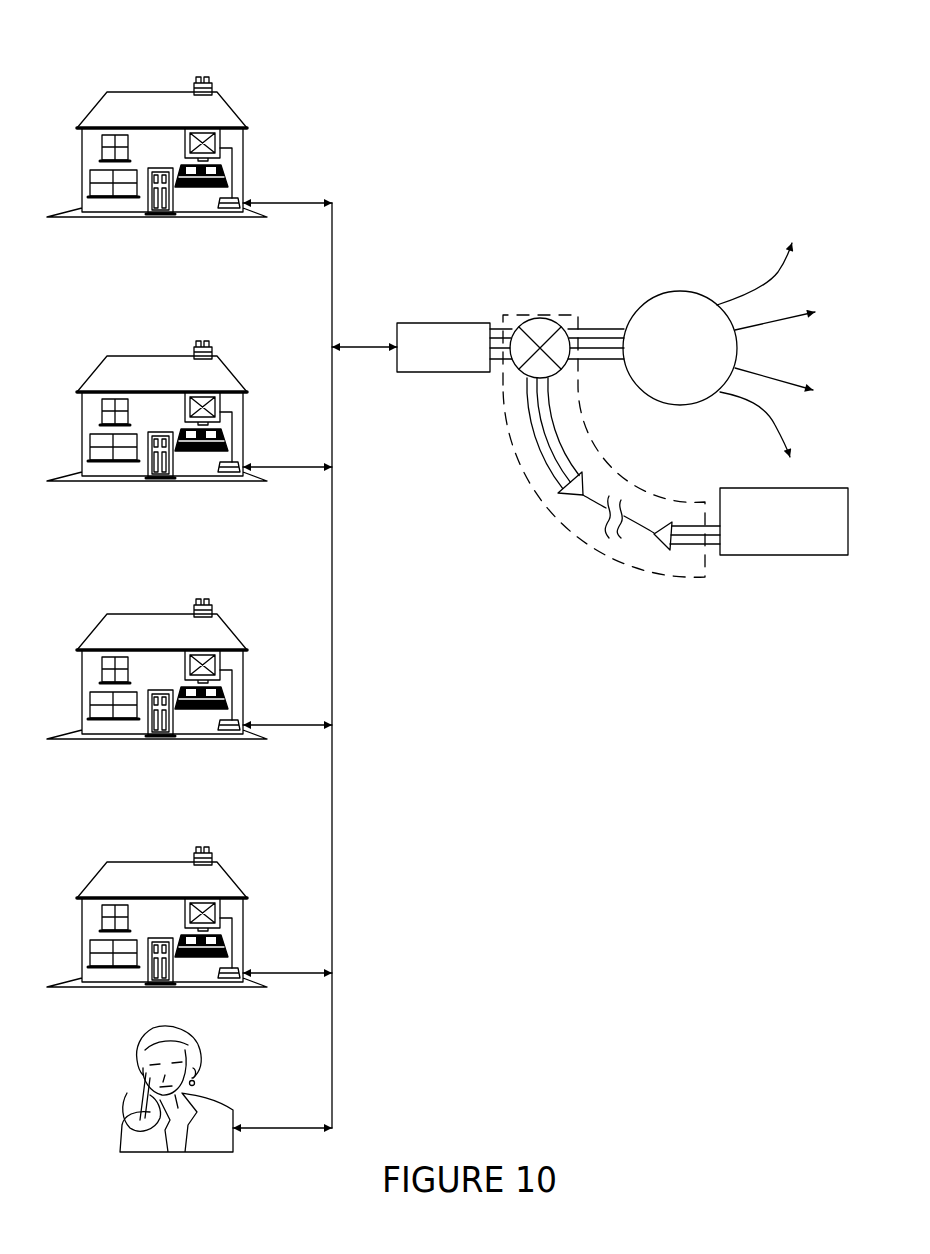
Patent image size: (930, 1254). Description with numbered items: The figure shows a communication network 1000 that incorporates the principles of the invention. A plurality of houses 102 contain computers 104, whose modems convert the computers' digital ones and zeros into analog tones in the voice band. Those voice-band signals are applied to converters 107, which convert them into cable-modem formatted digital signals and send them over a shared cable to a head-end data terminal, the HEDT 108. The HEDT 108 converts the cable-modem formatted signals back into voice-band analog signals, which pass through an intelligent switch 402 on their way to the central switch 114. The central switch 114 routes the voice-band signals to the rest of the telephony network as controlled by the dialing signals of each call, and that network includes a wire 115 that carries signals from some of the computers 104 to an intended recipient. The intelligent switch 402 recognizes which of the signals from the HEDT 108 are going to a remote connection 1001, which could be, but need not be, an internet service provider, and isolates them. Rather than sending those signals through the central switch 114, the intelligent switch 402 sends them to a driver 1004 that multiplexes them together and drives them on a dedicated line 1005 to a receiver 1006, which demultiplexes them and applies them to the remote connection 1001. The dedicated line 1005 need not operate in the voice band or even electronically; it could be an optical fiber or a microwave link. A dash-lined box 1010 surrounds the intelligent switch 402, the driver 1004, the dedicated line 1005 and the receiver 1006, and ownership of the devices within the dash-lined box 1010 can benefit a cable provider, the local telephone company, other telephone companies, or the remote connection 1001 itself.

The houses 102 is at (225, 103).
The computers 104 is at (185, 147).
The converter 107 is at (228, 210).
The head-end data terminal (HEDT) 108 is at (447, 322).
The intelligent switch 402 is at (543, 316).
The central switch 114 is at (677, 292).
The wire 115 is at (778, 272).
The communication network 1000 is at (612, 98).
The remote connection 1001 is at (772, 556).
The driver 1004 is at (572, 502).
The dedicated line 1005 is at (597, 502).
The receiver 1006 is at (664, 548).
The dash-lined box 1010 is at (607, 555).